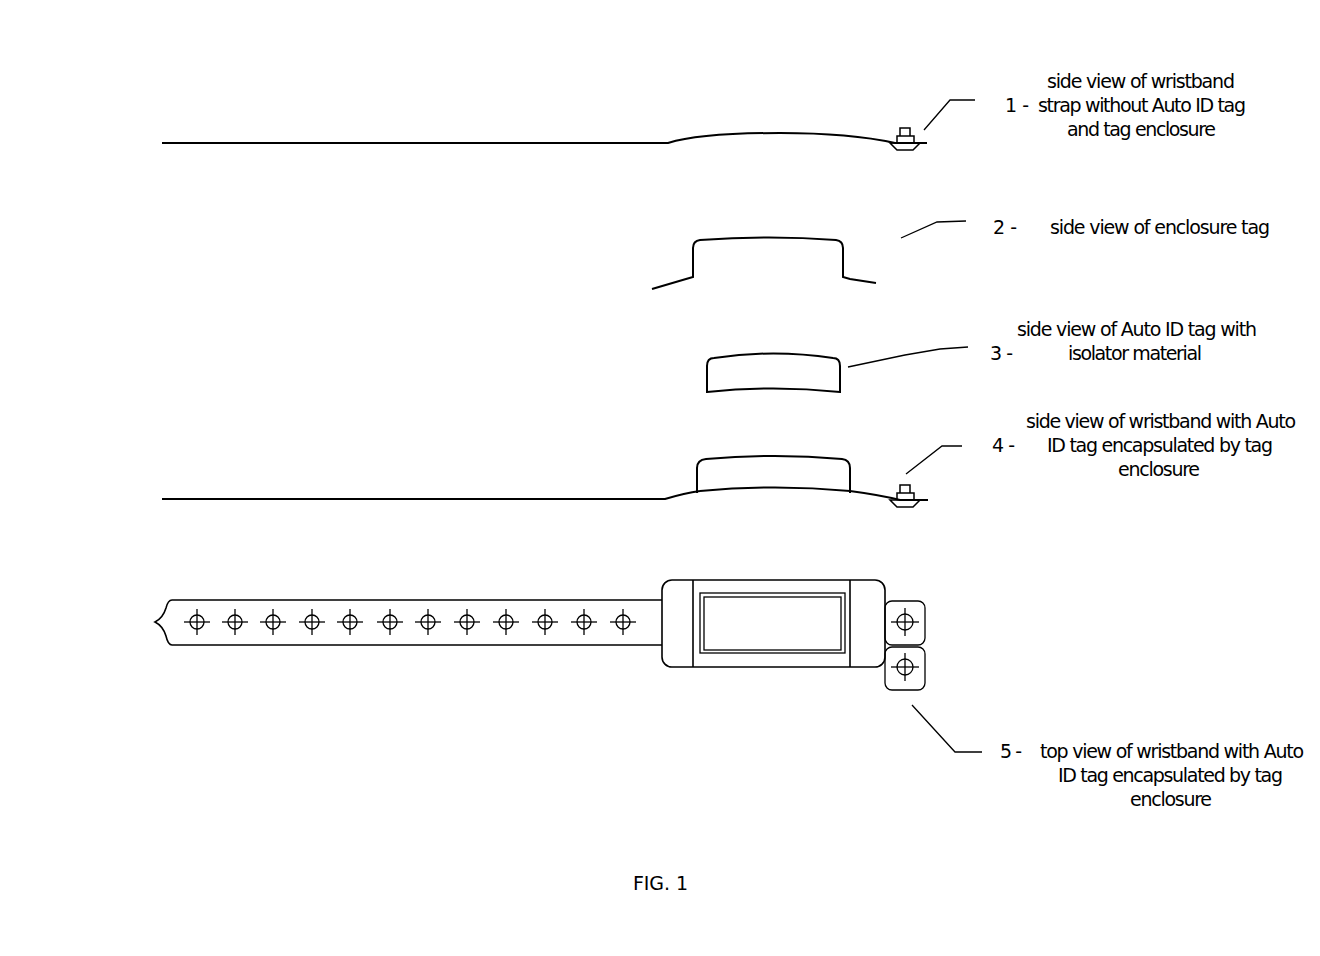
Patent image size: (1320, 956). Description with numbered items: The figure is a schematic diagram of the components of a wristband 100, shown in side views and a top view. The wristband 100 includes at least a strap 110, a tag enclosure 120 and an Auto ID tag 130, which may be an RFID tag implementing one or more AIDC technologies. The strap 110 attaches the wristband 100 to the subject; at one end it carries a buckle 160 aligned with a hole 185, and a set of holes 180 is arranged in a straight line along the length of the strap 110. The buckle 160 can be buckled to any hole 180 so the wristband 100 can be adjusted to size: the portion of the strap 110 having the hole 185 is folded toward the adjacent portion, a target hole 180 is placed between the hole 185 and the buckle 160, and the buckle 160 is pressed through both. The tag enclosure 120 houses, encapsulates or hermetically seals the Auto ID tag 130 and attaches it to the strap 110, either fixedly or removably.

The wristband 100 is at (408, 646).
The strap 110 is at (330, 160).
The tag enclosure 120 is at (683, 482).
The Auto ID tag 130 is at (710, 460).
The buckle 160 is at (1138, 640).
The holes 180 is at (312, 653).
The hole 185 is at (926, 623).